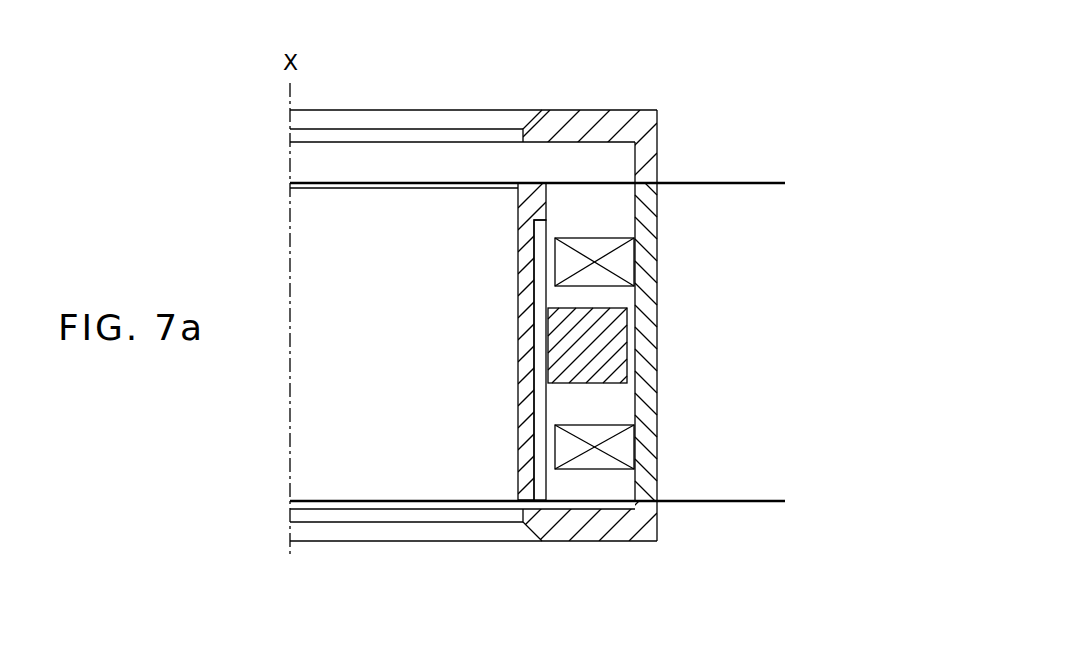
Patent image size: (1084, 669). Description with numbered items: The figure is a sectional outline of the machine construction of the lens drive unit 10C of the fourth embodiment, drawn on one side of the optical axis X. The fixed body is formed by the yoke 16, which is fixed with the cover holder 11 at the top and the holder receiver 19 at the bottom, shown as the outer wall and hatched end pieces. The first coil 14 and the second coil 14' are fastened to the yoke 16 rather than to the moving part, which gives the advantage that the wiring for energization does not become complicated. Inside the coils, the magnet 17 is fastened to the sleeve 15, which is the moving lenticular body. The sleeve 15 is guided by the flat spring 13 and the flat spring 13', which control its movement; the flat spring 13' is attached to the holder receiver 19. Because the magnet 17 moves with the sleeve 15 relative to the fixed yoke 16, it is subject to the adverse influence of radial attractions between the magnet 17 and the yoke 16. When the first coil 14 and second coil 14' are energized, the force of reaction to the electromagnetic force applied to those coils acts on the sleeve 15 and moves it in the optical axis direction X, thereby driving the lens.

The lens drive unit 10C is at (668, 78).
The cover holder 11 is at (658, 128).
The flat spring 13 is at (537, 120).
The flat spring 13' is at (537, 569).
The first coil 14 is at (650, 262).
The second coil 14' is at (656, 447).
The sleeve 15 is at (538, 458).
The yoke 16 is at (650, 403).
The magnet 17 is at (613, 358).
The holder receiver 19 is at (610, 528).